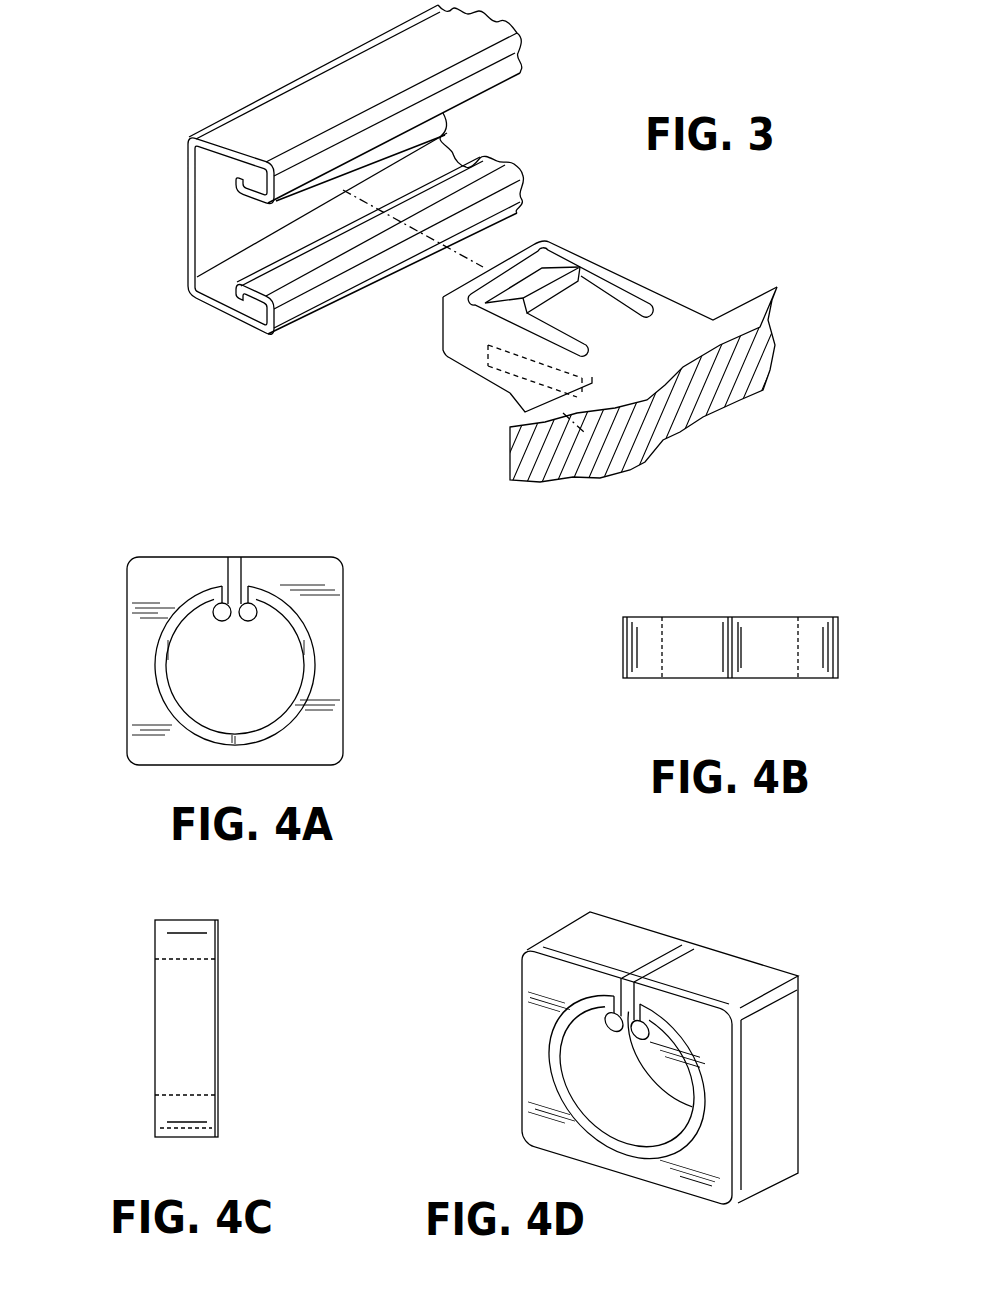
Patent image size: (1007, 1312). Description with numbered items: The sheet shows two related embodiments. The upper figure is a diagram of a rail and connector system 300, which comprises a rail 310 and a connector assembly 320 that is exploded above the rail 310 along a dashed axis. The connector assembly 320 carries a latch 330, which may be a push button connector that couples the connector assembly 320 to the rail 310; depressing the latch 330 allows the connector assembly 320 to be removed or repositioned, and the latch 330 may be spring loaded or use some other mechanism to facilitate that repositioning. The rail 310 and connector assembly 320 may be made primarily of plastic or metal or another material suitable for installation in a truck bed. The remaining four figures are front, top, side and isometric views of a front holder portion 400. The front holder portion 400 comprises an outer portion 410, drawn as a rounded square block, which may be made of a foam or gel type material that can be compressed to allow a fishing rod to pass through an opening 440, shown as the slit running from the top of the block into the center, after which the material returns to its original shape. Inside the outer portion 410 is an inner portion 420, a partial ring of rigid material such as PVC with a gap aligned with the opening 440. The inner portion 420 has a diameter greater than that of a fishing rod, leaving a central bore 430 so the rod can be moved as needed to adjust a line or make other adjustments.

In FIG. 3, the rail and connector system 300 is at (236, 96).
In FIG. 3, the rail 310 is at (248, 334).
In FIG. 3, the connector assembly 320 is at (565, 249).
In FIG. 3, the latch 330 is at (510, 394).
In FIG. 4A, the front holder portion 400 is at (146, 548).
In FIG. 4B, the front holder portion 400 is at (630, 606).
In FIG. 4C, the front holder portion 400 is at (121, 979).
In FIG. 4D, the front holder portion 400 is at (508, 924).
In FIG. 4A, the outer portion 410 is at (150, 588).
In FIG. 4B, the outer portion 410 is at (650, 663).
In FIG. 4C, the outer portion 410 is at (218, 1110).
In FIG. 4D, the outer portion 410 is at (773, 1050).
In FIG. 4A, the inner portion 420 is at (303, 688).
In FIG. 4D, the inner portion 420 is at (567, 1103).
In FIG. 4A, the opening 430 is at (213, 680).
In FIG. 4B, the opening 430 is at (777, 617).
In FIG. 4C, the opening 430 is at (218, 1003).
In FIG. 4D, the opening 430 is at (678, 1090).
In FIG. 4A, the opening 440 is at (234, 557).
In FIG. 4B, the opening 440 is at (730, 678).
In FIG. 4D, the opening 440 is at (688, 945).